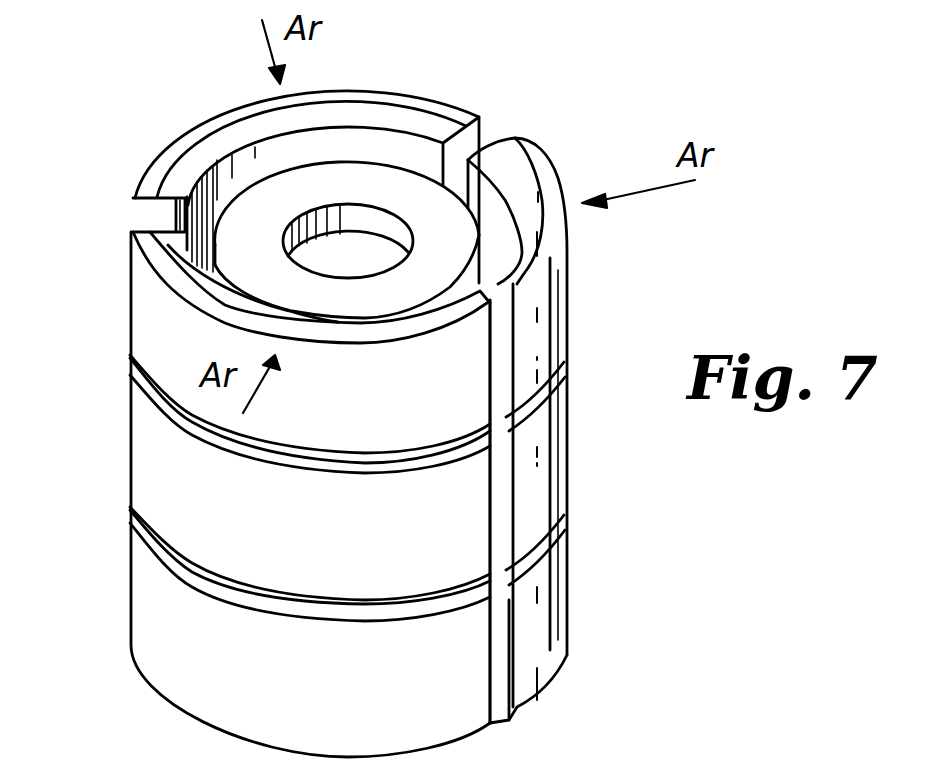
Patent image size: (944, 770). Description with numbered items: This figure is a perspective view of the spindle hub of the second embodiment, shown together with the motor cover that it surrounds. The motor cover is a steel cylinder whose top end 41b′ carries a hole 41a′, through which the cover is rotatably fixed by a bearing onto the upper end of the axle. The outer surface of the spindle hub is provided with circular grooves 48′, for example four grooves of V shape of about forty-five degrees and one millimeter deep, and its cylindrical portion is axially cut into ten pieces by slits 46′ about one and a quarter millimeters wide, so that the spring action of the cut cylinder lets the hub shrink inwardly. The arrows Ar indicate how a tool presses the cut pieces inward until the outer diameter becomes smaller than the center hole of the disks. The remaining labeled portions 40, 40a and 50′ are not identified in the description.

The outer cylindrical body 40 is at (372, 150).
The ledge of outer body 40a is at (472, 288).
The hole 41a′ is at (370, 222).
The top end 41b′ is at (452, 245).
The slits 46′ is at (143, 210).
The circular grooves 48′ is at (557, 540).
The inner cylindrical surface 50′ is at (203, 165).